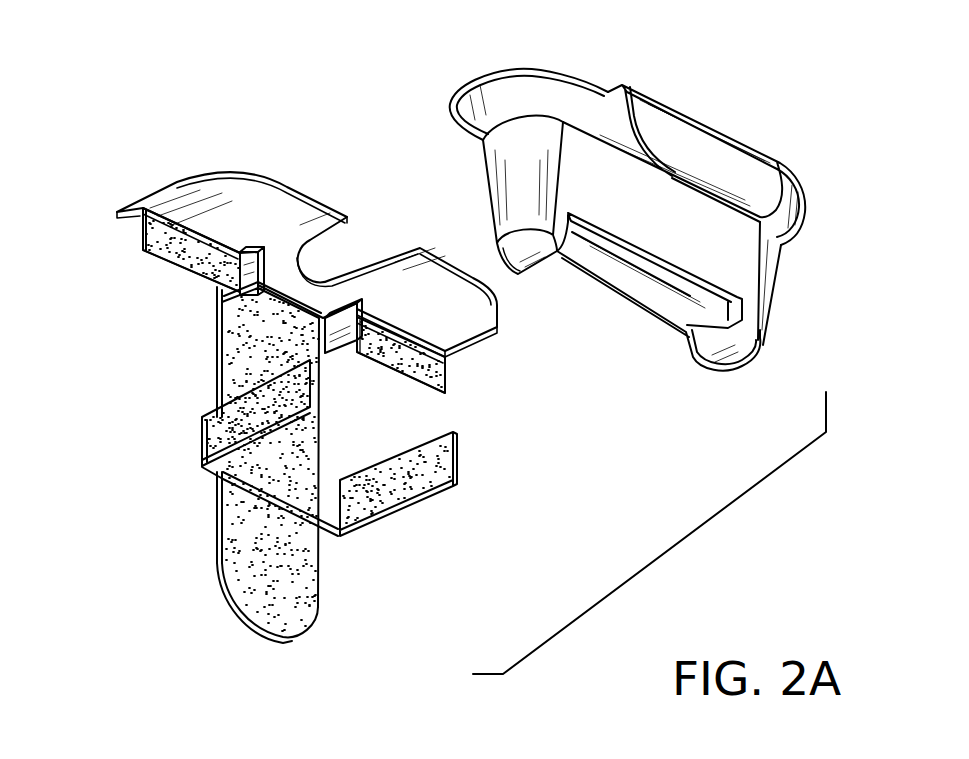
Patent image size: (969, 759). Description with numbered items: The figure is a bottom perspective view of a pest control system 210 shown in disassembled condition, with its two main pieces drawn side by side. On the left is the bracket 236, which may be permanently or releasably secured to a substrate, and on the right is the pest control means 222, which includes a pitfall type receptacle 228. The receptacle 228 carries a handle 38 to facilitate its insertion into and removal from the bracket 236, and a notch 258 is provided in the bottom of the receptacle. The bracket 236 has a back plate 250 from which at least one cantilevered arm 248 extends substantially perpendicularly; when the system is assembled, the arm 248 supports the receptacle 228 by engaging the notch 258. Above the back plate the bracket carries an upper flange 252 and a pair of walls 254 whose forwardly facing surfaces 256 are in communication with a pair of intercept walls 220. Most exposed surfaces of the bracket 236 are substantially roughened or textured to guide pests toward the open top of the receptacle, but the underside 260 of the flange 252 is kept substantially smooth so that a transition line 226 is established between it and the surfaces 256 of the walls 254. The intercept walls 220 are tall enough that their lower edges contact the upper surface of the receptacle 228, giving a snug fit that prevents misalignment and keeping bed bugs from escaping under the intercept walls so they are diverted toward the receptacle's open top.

The pest control system 210 is at (299, 116).
The upper flange 252 is at (227, 173).
The walls 254 is at (140, 236).
The forwardly facing surfaces 256 is at (170, 245).
The transition line 226 is at (212, 250).
The bracket 236 is at (218, 372).
The cantilevered arm 248 is at (232, 430).
The back plate 250 is at (220, 535).
The intercept walls 220 is at (253, 250).
The underside 260 is at (482, 310).
The pitfall type receptacle 228 is at (484, 70).
The pest control means 222 is at (686, 102).
The handle 38 is at (732, 173).
The notch 258 is at (642, 283).